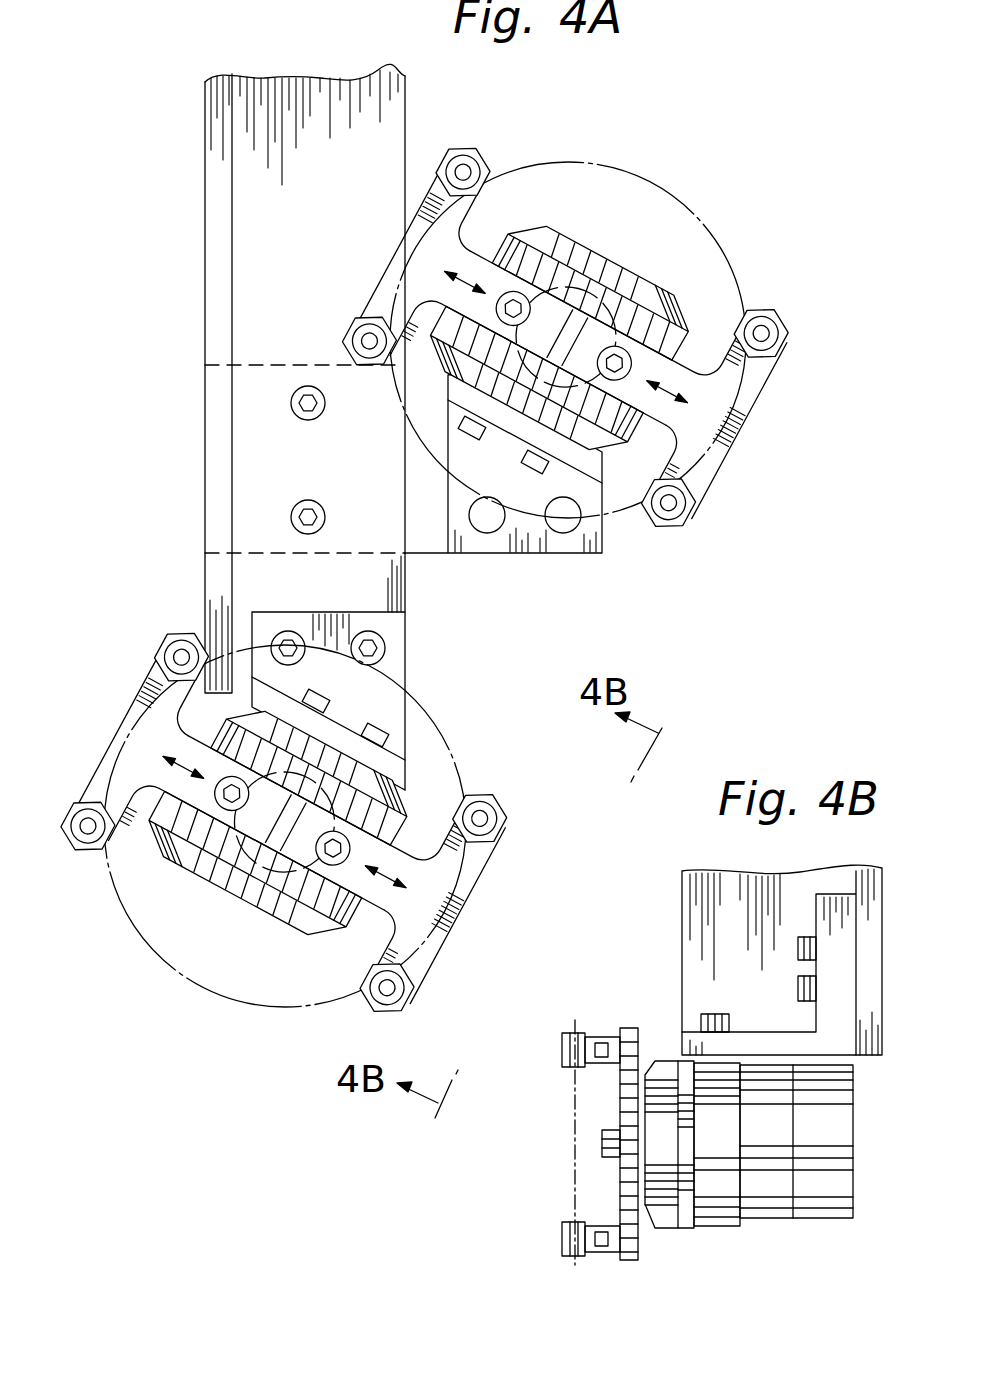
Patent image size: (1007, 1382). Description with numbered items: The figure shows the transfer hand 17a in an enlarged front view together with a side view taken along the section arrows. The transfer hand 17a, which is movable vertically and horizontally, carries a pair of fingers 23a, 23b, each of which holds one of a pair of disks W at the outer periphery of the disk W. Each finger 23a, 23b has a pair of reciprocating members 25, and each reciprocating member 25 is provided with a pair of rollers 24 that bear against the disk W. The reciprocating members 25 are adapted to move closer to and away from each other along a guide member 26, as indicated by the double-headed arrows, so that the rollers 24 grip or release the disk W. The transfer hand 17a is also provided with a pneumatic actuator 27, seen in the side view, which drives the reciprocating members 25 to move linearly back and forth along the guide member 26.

In FIG. 4A, the transfer hand 17a is at (580, 628).
In FIG. 4B, the transfer hand 17a is at (737, 1244).
In FIG. 4A, the finger 23a is at (206, 1000).
In FIG. 4A, the finger 23b is at (760, 280).
In FIG. 4A, the roller 24 is at (467, 160).
In FIG. 4B, the roller 24 is at (560, 1047).
In FIG. 4A, the reciprocating member 25 is at (382, 277).
In FIG. 4B, the reciprocating member 25 is at (639, 1233).
In FIG. 4A, the guide member 26 is at (552, 225).
In FIG. 4B, the guide member 26 is at (667, 1065).
In FIG. 4B, the pneumatic actuator 27 is at (775, 1202).
In FIG. 4A, the disk W is at (713, 236).